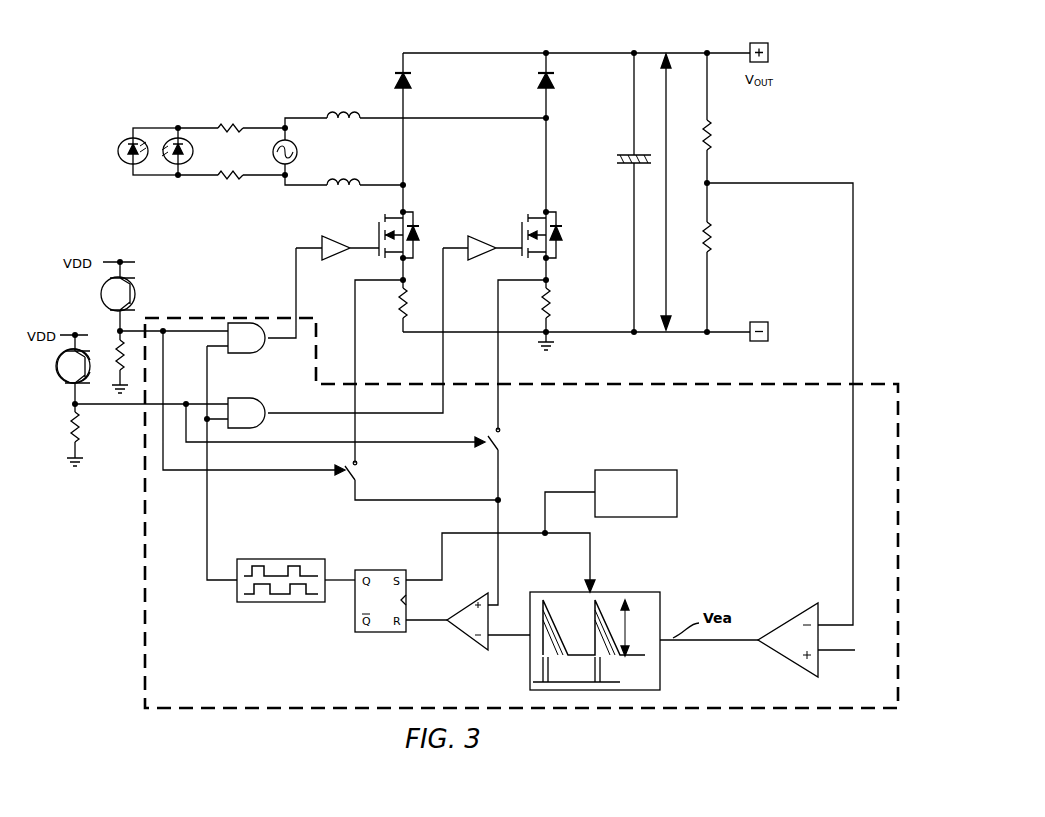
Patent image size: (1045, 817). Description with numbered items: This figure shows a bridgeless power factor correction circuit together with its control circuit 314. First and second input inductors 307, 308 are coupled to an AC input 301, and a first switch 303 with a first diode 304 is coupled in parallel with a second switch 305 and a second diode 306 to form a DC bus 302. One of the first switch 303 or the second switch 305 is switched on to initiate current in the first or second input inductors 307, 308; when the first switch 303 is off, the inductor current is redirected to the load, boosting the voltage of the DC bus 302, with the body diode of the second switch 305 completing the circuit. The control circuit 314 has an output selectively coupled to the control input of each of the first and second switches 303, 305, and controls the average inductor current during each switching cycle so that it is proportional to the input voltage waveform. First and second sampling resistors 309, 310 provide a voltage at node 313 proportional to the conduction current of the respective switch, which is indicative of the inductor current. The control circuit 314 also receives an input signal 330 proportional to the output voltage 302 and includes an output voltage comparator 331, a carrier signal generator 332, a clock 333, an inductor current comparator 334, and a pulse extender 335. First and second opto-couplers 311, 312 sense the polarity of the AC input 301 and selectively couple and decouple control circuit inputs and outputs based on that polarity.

The AC input 301 is at (273, 143).
The DC bus 302 is at (673, 192).
The first switch 303 is at (417, 216).
The first diode 304 is at (413, 82).
The second switch 305 is at (560, 216).
The second diode 306 is at (556, 82).
The first input inductor 307 is at (343, 127).
The second input inductor 308 is at (362, 177).
The first sampling resistor 309 is at (400, 331).
The second sampling resistor 310 is at (553, 306).
The first opto-coupler 311 is at (118, 143).
The second opto-coupler 312 is at (198, 143).
The node 313 is at (505, 498).
The control circuit 314 is at (753, 383).
The input signal 330 is at (853, 446).
The output voltage comparator 331 is at (775, 652).
The carrier signal generator 332 is at (528, 665).
The clock 333 is at (677, 471).
The inductor current comparator 334 is at (452, 629).
The pulse extender 335 is at (262, 559).